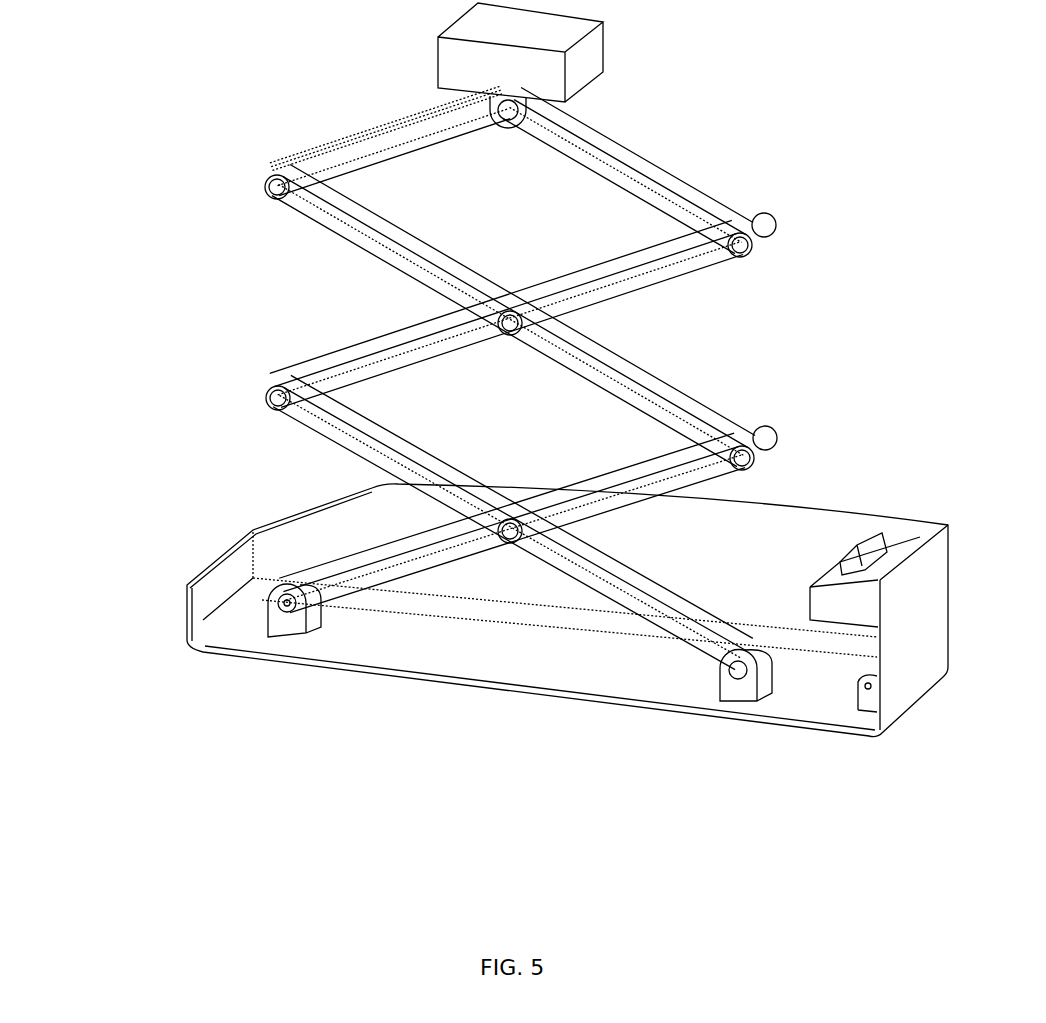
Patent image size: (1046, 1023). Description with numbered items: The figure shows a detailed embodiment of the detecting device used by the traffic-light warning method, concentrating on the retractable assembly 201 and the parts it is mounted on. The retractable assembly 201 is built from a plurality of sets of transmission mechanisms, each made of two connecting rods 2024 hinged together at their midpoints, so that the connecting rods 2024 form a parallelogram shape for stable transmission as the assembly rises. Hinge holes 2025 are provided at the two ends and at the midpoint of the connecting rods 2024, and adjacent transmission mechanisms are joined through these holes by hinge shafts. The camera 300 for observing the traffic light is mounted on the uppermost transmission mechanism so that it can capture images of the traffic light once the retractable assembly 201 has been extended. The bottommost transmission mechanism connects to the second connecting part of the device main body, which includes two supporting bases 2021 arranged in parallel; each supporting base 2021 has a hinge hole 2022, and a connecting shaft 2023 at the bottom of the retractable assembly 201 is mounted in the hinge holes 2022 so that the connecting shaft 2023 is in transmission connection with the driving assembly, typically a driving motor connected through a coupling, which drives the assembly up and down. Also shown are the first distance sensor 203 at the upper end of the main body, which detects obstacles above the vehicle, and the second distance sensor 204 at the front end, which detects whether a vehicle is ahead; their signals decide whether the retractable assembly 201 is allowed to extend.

The camera 300 is at (438, 60).
The retractable assembly 201 is at (667, 208).
The first distance sensor 203 is at (872, 540).
The second distance sensor 204 is at (183, 600).
The supporting base 2021 is at (277, 622).
The hinge hole 2022 is at (287, 615).
The connecting shaft 2023 is at (280, 605).
The connecting rod 2024 is at (588, 592).
The hinge hole 2025 is at (267, 397).